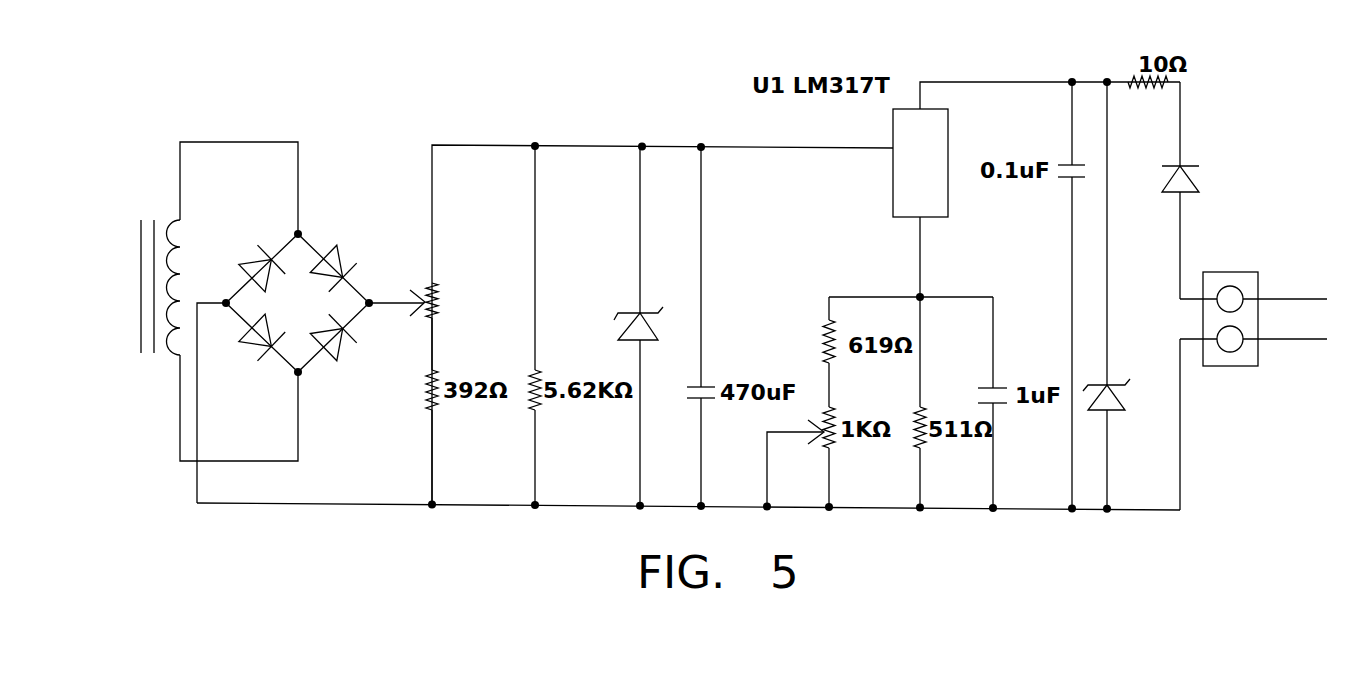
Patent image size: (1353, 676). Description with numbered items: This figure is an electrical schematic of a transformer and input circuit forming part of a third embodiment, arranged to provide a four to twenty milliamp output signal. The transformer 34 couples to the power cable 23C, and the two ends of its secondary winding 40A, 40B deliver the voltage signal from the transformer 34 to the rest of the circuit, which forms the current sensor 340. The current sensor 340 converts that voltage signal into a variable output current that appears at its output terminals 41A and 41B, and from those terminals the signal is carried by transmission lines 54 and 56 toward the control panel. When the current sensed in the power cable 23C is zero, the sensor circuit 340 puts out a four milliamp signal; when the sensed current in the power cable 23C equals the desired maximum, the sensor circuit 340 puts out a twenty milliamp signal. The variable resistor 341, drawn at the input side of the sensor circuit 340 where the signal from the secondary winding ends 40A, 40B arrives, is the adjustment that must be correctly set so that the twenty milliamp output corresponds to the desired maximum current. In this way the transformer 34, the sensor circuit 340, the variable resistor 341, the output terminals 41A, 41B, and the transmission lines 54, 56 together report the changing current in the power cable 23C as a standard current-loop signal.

The power cable 23C is at (140, 335).
The transformer 34 is at (182, 235).
The secondary winding end 40A is at (180, 161).
The secondary winding end 40B is at (175, 442).
The current sensor 340 is at (482, 104).
The variable resistor 341 is at (422, 283).
The output terminal 41A is at (1232, 287).
The output terminal 41B is at (1230, 352).
The transmission line 54 is at (1283, 297).
The transmission line 56 is at (1280, 342).